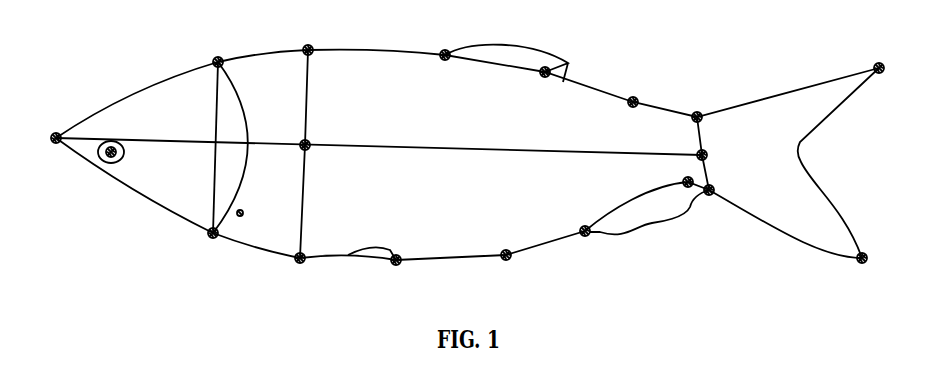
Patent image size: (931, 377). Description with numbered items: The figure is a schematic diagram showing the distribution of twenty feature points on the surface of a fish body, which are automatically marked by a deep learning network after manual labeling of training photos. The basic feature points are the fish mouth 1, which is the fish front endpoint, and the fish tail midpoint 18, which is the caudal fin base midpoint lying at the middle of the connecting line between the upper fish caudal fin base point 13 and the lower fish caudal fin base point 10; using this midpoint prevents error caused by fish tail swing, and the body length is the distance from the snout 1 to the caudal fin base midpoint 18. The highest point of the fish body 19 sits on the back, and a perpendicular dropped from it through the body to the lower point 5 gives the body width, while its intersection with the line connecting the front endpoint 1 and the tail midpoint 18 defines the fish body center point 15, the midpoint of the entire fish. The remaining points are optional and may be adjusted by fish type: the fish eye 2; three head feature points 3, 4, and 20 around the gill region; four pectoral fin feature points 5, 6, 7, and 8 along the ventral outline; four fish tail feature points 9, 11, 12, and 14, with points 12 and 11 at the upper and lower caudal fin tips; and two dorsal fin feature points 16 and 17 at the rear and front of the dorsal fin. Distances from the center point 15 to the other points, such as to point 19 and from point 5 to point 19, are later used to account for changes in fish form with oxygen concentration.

The fish mouth feature point 1 is at (46, 144).
The fish eye feature point 2 is at (117, 159).
The fish head feature point 3 is at (209, 246).
The fish head feature point 4 is at (249, 217).
The pectoral fin feature point 5 is at (295, 275).
The pectoral fin feature point 6 is at (394, 274).
The pectoral fin feature point 7 is at (504, 270).
The pectoral fin feature point 8 is at (582, 246).
The fish tail feature point 9 is at (679, 171).
The lower fish caudal fin base point 10 is at (709, 204).
The fish tail feature point 11 is at (877, 267).
The fish tail feature point 12 is at (879, 51).
The upper fish caudal fin base point 13 is at (697, 101).
The fish tail feature point 14 is at (634, 88).
The fish body center point 15 is at (320, 132).
The dorsal fin feature point 16 is at (563, 77).
The dorsal fin feature point 17 is at (433, 41).
The fish tail midpoint 18 is at (720, 162).
The highest point of the fish body 19 is at (321, 37).
The fish head feature point 20 is at (204, 50).